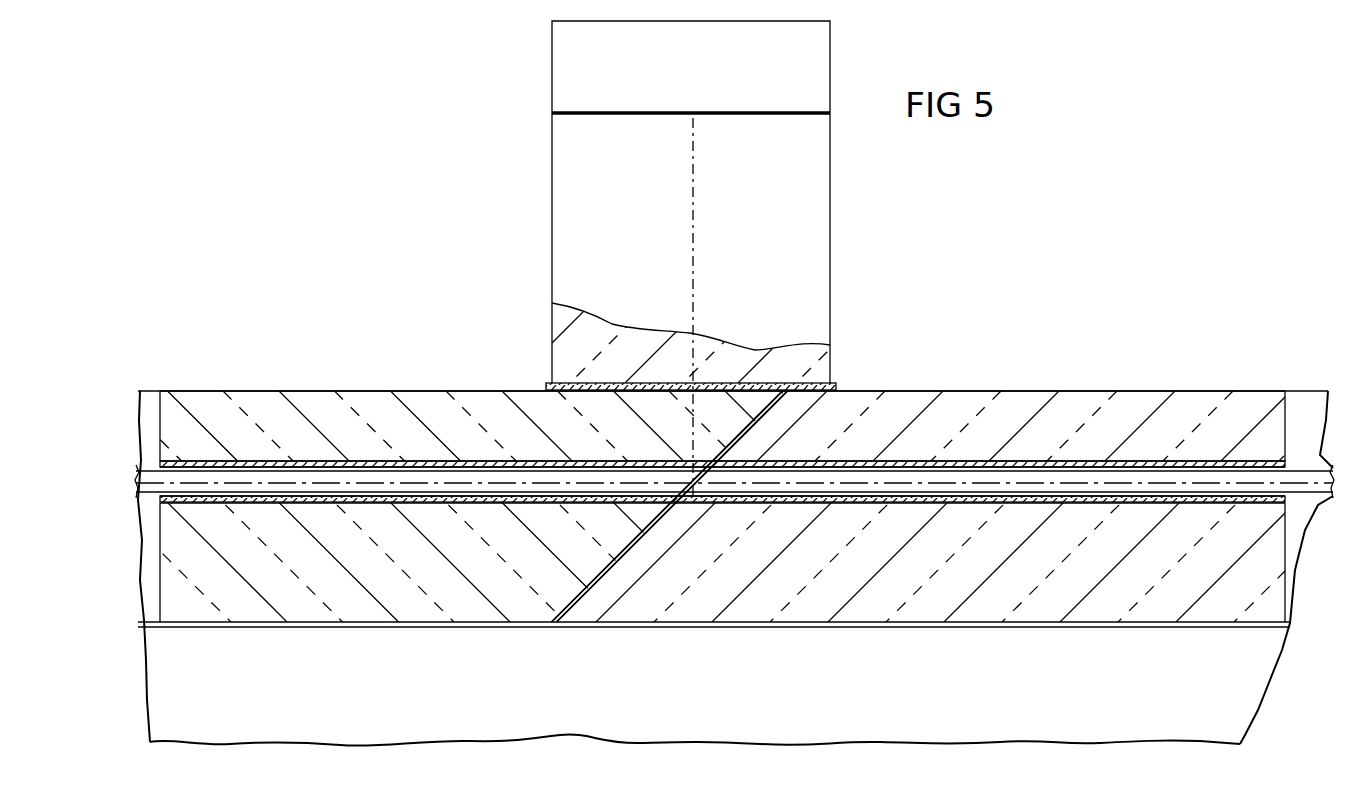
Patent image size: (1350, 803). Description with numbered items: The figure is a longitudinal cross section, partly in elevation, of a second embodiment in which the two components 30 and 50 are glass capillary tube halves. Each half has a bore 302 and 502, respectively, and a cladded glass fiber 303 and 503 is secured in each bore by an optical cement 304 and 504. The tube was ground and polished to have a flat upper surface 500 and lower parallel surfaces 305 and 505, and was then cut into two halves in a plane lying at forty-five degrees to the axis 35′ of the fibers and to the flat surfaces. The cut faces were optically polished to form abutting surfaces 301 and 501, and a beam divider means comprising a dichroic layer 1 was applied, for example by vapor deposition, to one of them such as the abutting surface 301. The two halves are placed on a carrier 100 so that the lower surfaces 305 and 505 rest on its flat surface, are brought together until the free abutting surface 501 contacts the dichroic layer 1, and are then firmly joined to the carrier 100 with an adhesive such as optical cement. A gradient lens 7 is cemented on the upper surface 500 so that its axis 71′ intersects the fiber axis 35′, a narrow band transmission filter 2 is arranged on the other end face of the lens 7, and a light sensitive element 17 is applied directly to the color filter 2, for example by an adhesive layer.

The dichroic layer 1 is at (651, 525).
The narrow band transmission filter 2 is at (790, 113).
The gradient lens 7 is at (802, 176).
The light sensitive element 17 is at (812, 72).
The capillary half 30 is at (298, 388).
The axis of the fibers 35′ is at (543, 483).
The capillary half 50 is at (953, 388).
The axis of the gradient lens 71′ is at (697, 270).
The carrier 100 is at (750, 725).
The abutting surface 301 is at (648, 535).
The bore 302 is at (217, 462).
The cladded glass fiber 303 is at (362, 480).
The optical cement 304 is at (488, 462).
The lower parallel surface 305 is at (333, 622).
The upper surface 500 is at (410, 390).
The abutting surface 501 is at (607, 570).
The bore 502 is at (1070, 462).
The cladded glass fiber 503 is at (1215, 478).
The optical cement 504 is at (1160, 462).
The lower parallel surface 505 is at (830, 622).